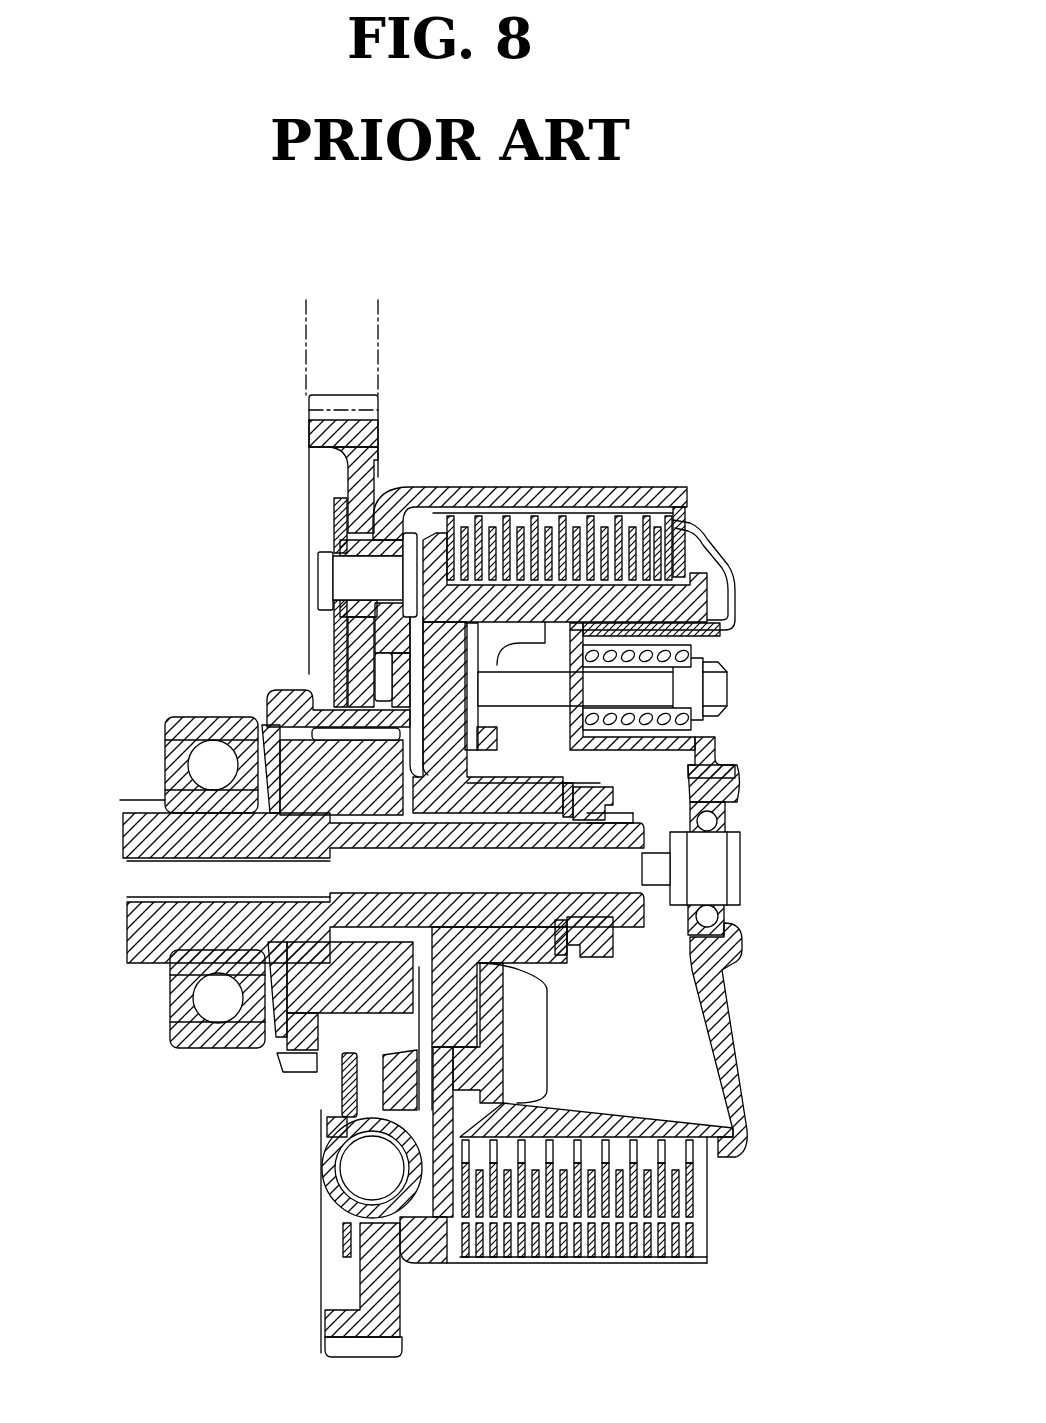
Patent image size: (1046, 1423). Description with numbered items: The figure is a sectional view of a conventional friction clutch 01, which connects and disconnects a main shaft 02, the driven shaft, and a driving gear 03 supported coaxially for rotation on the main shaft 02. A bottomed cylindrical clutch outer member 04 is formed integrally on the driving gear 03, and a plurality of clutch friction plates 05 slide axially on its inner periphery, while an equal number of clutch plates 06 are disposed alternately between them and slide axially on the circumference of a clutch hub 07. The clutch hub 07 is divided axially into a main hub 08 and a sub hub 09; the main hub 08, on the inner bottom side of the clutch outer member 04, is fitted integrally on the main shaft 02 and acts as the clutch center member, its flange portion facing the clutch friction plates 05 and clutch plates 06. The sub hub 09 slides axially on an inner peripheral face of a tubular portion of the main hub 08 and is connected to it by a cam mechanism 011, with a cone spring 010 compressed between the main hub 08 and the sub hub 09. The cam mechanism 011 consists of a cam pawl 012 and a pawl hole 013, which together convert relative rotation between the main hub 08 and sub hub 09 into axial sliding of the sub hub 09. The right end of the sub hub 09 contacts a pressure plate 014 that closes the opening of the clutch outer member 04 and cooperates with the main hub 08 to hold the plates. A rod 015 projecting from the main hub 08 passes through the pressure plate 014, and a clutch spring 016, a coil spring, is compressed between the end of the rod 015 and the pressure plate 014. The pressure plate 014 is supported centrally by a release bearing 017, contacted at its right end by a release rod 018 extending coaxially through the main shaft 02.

The friction clutch 01 is at (632, 358).
The main shaft 02 is at (130, 937).
The driving gear 03 is at (309, 431).
The clutch outer member 04 is at (515, 487).
The clutch friction plates 05 is at (605, 512).
The clutch plates 06 is at (568, 515).
The clutch hub 07 is at (605, 985).
The main hub 08 is at (513, 968).
The sub hub 09 is at (547, 1080).
The cone spring 010 is at (570, 1105).
The cam mechanism 011 is at (190, 1112).
The cam pawl 012 is at (440, 1077).
The pawl hole 013 is at (337, 1112).
The pressure plate 014 is at (745, 592).
The rod 015 is at (660, 687).
The clutch spring 016 is at (680, 718).
The release bearing 017 is at (720, 893).
The release rod 018 is at (650, 867).